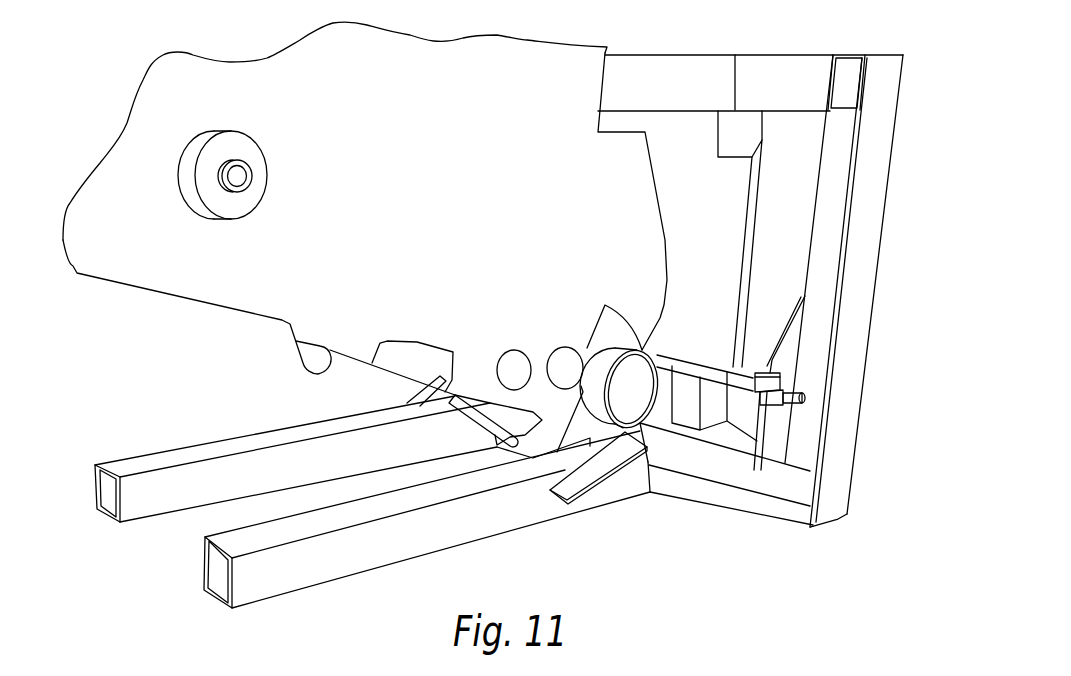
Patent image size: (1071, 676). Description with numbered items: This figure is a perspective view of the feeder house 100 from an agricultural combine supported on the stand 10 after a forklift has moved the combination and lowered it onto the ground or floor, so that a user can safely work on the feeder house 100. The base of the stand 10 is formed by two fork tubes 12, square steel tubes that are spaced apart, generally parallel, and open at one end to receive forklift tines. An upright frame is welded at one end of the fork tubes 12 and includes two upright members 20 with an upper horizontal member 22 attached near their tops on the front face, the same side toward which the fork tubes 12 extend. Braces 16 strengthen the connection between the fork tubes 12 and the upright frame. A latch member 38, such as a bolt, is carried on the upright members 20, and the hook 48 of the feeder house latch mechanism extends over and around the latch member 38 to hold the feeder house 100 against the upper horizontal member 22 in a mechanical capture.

The support stand 10 is at (763, 265).
The fork tubes 12 is at (430, 538).
The braces 16 is at (578, 470).
The upright members 20 is at (860, 217).
The upper horizontal member 22 is at (797, 67).
The latch member 38 is at (793, 392).
The hook 48 is at (770, 403).
The feeder house 100 is at (415, 179).